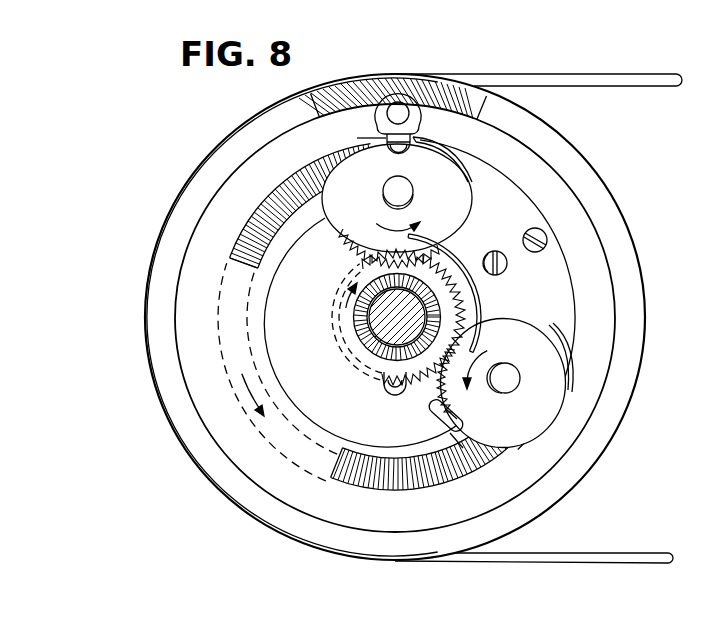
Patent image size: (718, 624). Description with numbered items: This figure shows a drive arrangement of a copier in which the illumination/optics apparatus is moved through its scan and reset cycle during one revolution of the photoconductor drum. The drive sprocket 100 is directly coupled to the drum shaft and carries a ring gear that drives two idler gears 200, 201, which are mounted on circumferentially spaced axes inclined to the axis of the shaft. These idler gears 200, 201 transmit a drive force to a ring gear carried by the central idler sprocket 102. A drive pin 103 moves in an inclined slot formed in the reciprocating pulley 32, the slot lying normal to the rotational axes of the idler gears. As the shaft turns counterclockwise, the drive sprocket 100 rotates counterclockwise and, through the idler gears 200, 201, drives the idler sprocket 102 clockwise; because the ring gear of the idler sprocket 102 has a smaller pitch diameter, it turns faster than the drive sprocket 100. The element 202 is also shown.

The reciprocating pulley 32 is at (628, 405).
The drive sprocket 100 is at (236, 282).
The idler sprocket 102 is at (383, 374).
The drive pin 103 is at (400, 110).
The idler gear 200 is at (381, 165).
The idler gear 201 is at (540, 397).
The carrier plate 202 is at (567, 285).